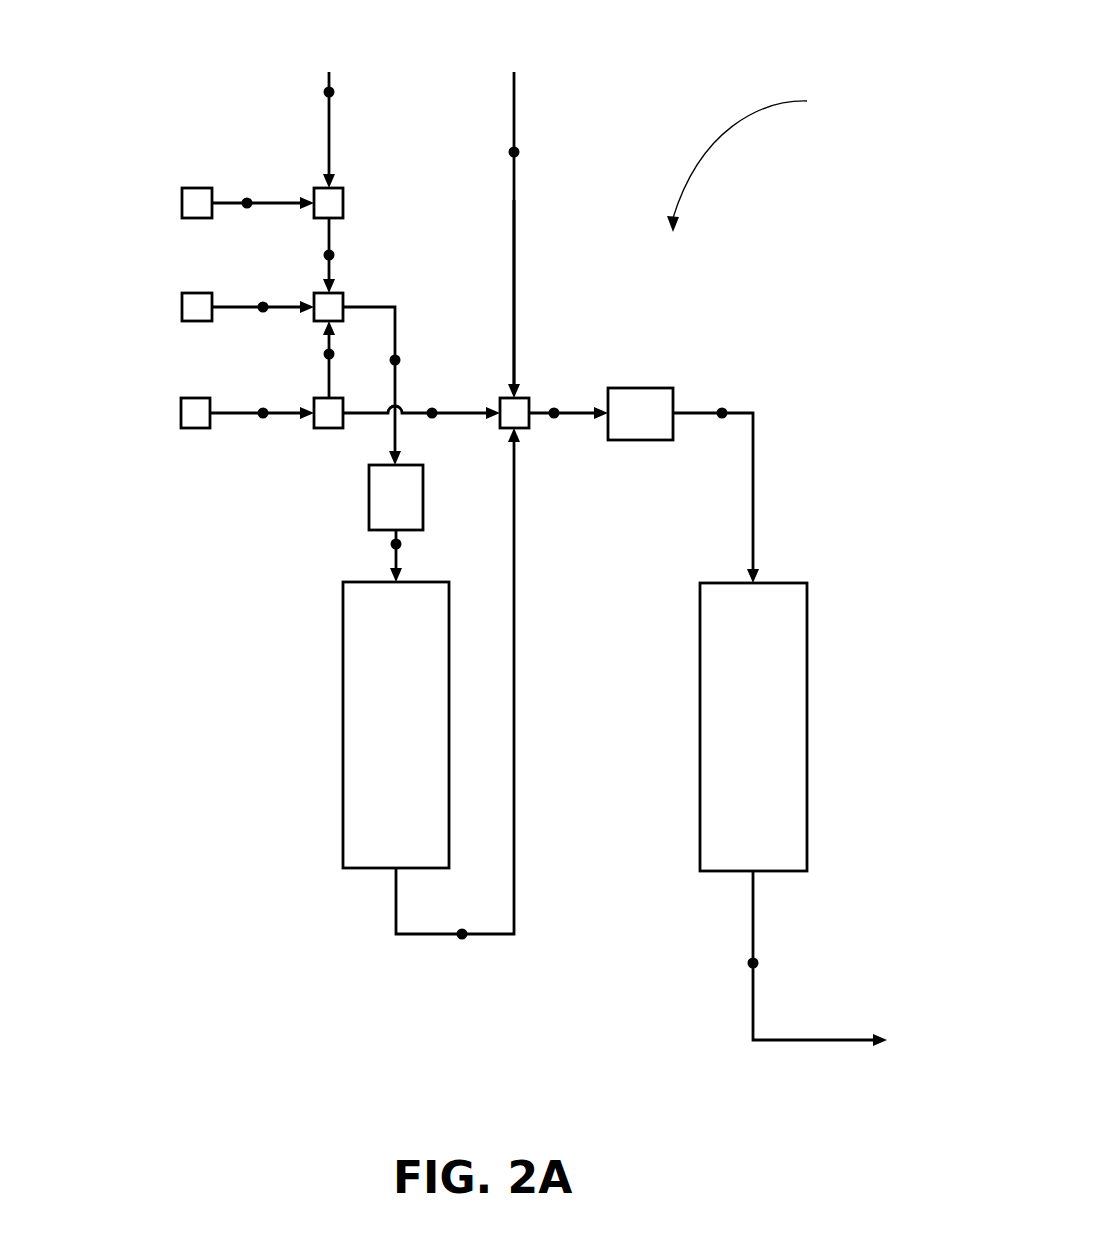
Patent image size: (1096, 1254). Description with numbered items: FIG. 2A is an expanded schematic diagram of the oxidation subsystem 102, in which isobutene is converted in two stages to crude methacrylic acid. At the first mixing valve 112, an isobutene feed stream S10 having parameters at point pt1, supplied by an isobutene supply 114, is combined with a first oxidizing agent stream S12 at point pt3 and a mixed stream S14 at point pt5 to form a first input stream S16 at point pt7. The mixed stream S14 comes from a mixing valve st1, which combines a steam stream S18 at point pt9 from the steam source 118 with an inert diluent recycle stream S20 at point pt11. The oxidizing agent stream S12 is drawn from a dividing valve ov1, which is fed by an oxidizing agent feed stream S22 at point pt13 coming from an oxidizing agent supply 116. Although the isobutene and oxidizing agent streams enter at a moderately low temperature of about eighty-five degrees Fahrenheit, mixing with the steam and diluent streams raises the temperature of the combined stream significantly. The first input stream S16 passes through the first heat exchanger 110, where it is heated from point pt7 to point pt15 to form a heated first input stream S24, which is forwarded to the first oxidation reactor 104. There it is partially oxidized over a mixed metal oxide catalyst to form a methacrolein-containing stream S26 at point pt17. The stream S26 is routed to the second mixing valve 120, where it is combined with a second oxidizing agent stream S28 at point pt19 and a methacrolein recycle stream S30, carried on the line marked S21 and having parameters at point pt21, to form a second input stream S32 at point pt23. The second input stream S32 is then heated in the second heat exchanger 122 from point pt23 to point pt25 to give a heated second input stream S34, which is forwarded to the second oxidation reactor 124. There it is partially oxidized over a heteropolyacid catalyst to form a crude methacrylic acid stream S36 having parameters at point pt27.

The process system 102 is at (763, 163).
The first oxidation reactor 104 is at (396, 725).
The first heat exchanger 110 is at (396, 497).
The first mixing valve 112 is at (345, 305).
The isobutene supply 114 is at (196, 308).
The oxidizing agent supply 116 is at (190, 413).
The steam source 118 is at (196, 205).
The second mixing valve 120 is at (515, 413).
The second heat exchanger 122 is at (640, 414).
The second oxidation reactor 124 is at (753, 727).
The mixing valve st1 is at (330, 203).
The dividing valve ov1 is at (323, 413).
The isobutene feed stream S10 is at (243, 310).
The first oxidizing agent stream S12 is at (332, 385).
The mixed stream S14 is at (332, 237).
The first input stream S16 is at (398, 430).
The steam stream S18 is at (273, 203).
The inert diluent recycle stream S20 is at (327, 150).
The stream S21 is at (512, 150).
The oxidizing agent feed stream S22 is at (280, 415).
The heated first input stream S24 is at (393, 562).
The methacrolein-containing stream S26 is at (516, 780).
The second oxidizing agent stream S28 is at (457, 413).
The methacrolein recycle stream S30 is at (516, 265).
The second input stream S32 is at (580, 410).
The heated second input stream S34 is at (753, 520).
The crude methacrylic acid stream S36 is at (778, 1042).
The point pt1 is at (263, 304).
The point pt3 is at (327, 354).
The point pt5 is at (327, 255).
The point pt7 is at (400, 360).
The point pt9 is at (247, 200).
The point pt11 is at (325, 92).
The point pt13 is at (263, 410).
The point pt15 is at (400, 544).
The point pt17 is at (464, 940).
The point pt19 is at (434, 418).
The point pt21 is at (512, 150).
The point pt23 is at (556, 418).
The point pt25 is at (722, 408).
The point pt27 is at (748, 965).